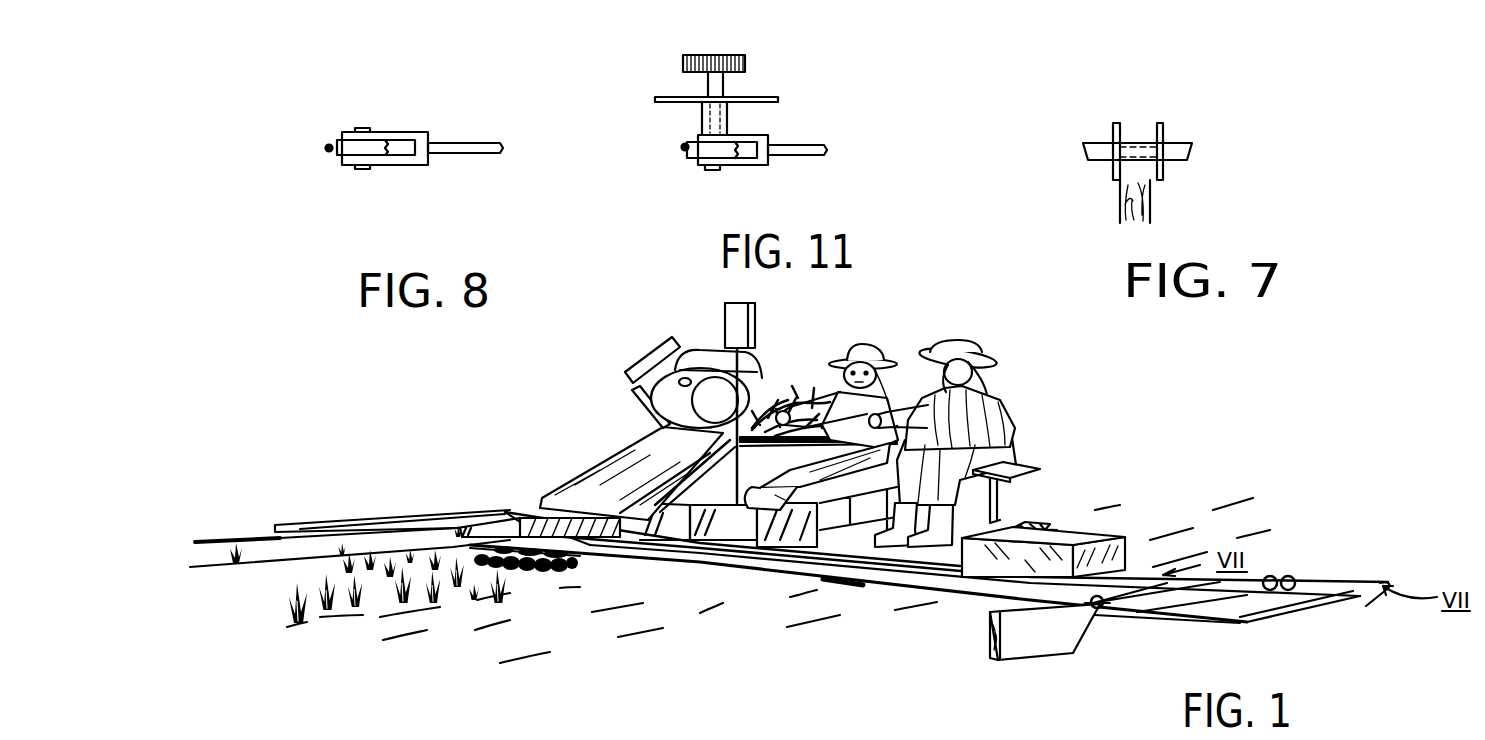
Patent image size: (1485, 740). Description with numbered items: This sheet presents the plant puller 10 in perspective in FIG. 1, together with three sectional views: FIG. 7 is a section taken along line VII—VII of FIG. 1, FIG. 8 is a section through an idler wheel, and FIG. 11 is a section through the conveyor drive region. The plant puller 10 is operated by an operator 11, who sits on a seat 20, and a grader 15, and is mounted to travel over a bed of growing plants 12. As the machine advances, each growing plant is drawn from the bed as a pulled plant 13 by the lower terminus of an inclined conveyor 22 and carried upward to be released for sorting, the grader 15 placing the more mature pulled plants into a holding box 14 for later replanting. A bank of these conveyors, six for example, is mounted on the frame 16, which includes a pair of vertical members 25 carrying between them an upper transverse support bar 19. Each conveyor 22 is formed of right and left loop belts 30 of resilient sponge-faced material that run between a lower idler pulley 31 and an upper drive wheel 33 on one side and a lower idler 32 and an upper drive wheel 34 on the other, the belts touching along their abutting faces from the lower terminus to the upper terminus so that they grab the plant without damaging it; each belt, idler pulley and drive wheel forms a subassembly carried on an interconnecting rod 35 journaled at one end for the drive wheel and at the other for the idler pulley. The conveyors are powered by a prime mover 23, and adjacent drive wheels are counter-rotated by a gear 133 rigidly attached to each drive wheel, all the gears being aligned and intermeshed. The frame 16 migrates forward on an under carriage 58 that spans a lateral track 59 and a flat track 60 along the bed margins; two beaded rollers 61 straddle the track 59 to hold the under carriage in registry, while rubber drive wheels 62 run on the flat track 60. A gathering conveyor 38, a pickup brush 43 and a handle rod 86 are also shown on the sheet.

In FIG. 1, the plant puller 10 is at (785, 315).
In FIG. 1, the operator 11 is at (873, 345).
In FIG. 1, the growing plants 12 is at (320, 597).
In FIG. 1, the pulled plant 13 is at (767, 403).
In FIG. 1, the holding box 14 is at (1032, 528).
In FIG. 1, the grader 15 is at (1000, 393).
In FIG. 1, the frame 16 is at (737, 548).
In FIG. 1, the upper transverse support bar 19 is at (695, 476).
In FIG. 1, the seat 20 is at (1053, 467).
In FIG. 1, the inclined conveyor 22 is at (566, 473).
In FIG. 1, the prime mover 23 is at (693, 403).
In FIG. 1, the vertical members 25 is at (738, 456).
In FIG. 8, the loop belts 30 is at (326, 147).
In FIG. 11, the loop belts 30 is at (683, 148).
In FIG. 8, the lower idler pulley 31 is at (331, 137).
In FIG. 8, the lower idler 32 is at (330, 140).
In FIG. 11, the upper drive wheel 33 is at (689, 140).
In FIG. 11, the upper drive wheel 34 is at (688, 142).
In FIG. 8, the interconnecting rod 35 is at (462, 145).
In FIG. 11, the interconnecting rod 35 is at (810, 154).
In FIG. 1, the gathering conveyor 38 is at (508, 512).
In FIG. 1, the pickup brush 43 is at (610, 513).
In FIG. 1, the under carriage 58 is at (907, 590).
In FIG. 7, the lateral track 59 is at (1148, 207).
In FIG. 1, the lateral track 59 is at (1033, 640).
In FIG. 11, the flat track 60 is at (776, 101).
In FIG. 1, the flat track 60 is at (217, 540).
In FIG. 7, the beaded rollers 61 is at (1163, 168).
In FIG. 1, the beaded rollers 61 is at (1093, 607).
In FIG. 1, the drive wheels 62 is at (280, 527).
In FIG. 11, the handle rod 86 is at (718, 80).
In FIG. 11, the gear 133 is at (748, 64).